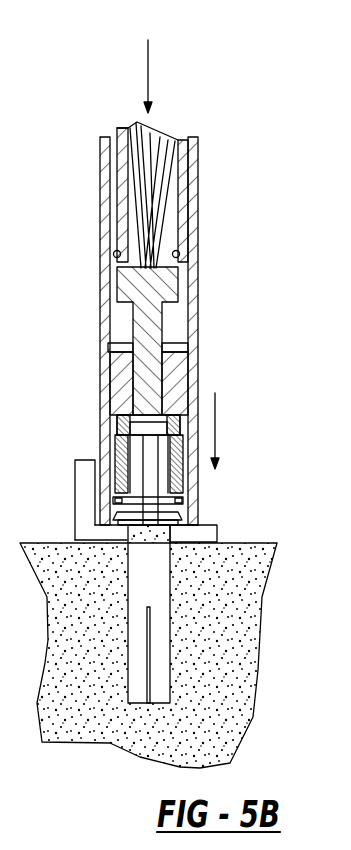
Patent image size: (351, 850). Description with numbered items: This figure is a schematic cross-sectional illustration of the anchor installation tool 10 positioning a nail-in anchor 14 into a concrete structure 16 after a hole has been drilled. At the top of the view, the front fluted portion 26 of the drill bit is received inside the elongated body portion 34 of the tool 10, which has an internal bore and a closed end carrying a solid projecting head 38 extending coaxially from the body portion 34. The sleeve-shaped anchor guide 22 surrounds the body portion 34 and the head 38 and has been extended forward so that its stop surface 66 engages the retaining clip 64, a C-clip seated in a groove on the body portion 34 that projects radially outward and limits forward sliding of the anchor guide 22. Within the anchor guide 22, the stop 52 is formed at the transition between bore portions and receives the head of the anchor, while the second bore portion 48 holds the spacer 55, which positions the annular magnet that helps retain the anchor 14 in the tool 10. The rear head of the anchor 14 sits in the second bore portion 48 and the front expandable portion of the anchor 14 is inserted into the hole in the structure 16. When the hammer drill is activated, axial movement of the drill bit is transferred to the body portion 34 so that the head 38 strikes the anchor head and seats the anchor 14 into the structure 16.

The anchor installation tool 10 is at (69, 100).
The body portion 34 is at (172, 138).
The front fluted portion 26 is at (148, 182).
The stop surface 66 is at (181, 256).
The retaining clip 64 is at (110, 318).
The head 38 is at (150, 334).
The stop 52 is at (123, 352).
The second bore portion 48 is at (132, 390).
The anchor guide 22 is at (198, 376).
The spacer 55 is at (115, 457).
The nail-in anchor 14 is at (160, 572).
The structure 16 is at (213, 618).